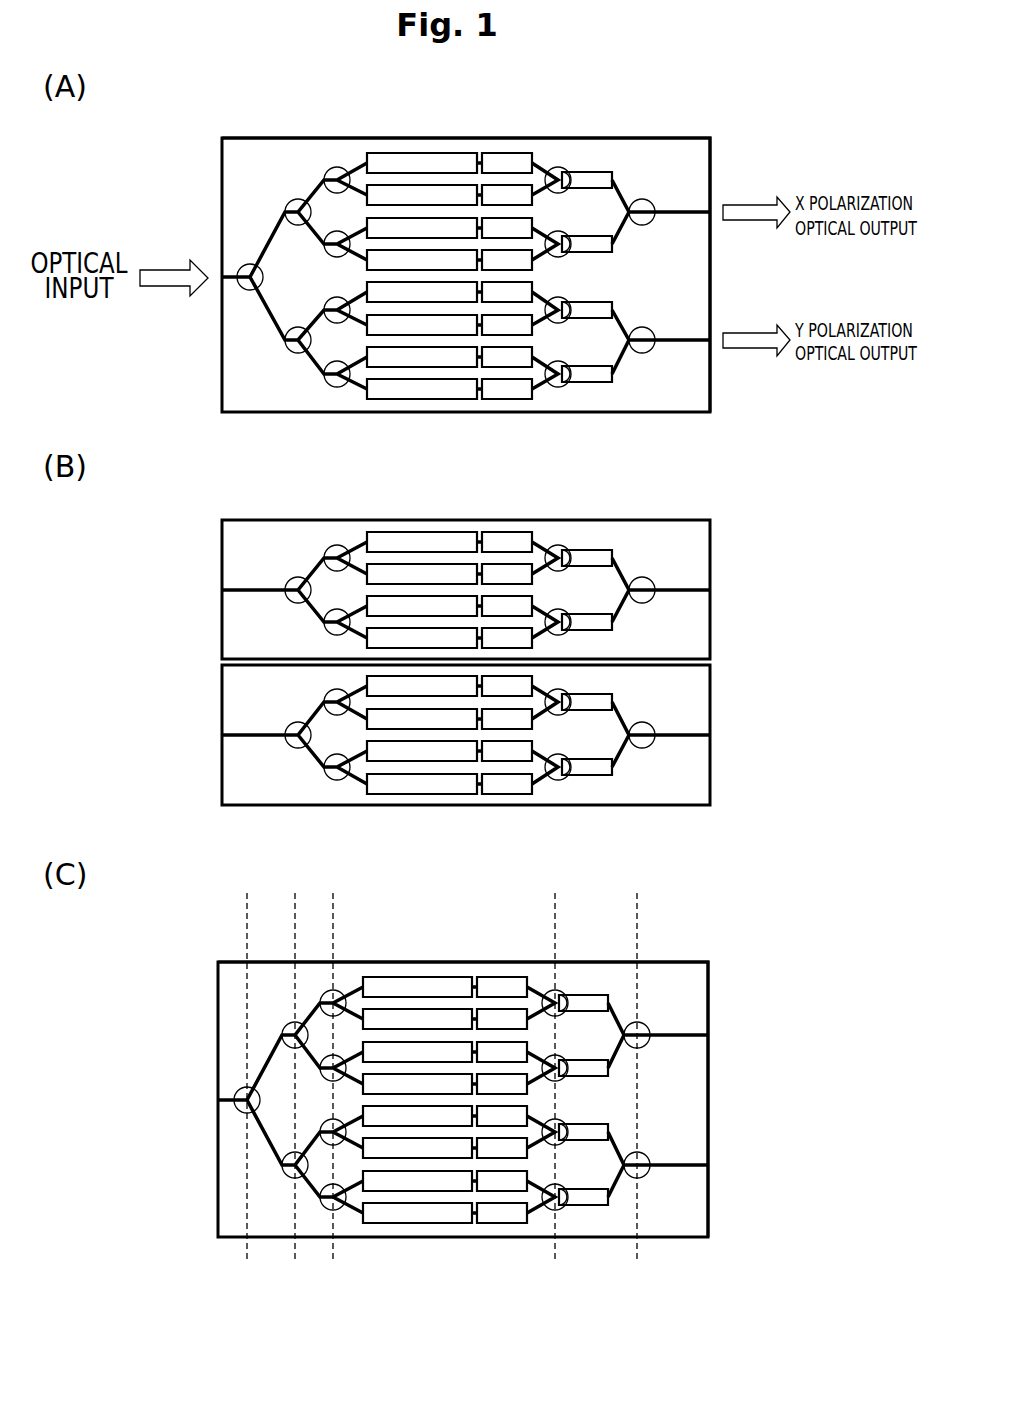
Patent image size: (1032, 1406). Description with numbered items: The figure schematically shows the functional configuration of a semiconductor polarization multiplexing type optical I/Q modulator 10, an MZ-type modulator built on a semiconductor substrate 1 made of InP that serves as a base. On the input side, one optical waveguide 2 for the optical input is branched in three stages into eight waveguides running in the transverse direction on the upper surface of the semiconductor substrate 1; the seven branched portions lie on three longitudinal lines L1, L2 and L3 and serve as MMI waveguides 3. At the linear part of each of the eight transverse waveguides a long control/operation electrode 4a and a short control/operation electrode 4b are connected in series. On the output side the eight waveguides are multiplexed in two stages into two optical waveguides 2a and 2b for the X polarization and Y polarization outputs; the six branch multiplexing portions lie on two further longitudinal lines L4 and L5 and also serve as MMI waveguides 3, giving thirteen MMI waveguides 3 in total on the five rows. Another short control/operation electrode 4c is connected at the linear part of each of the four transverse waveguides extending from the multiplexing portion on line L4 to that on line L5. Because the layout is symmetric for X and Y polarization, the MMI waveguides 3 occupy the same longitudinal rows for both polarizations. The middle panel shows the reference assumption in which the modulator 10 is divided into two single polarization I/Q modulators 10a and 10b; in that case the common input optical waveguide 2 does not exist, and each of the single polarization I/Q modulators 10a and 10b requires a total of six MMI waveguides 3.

The semiconductor substrate 1 is at (640, 155).
The optical waveguide 2 is at (230, 275).
The optical waveguide 2a is at (676, 210).
The optical waveguide 2b is at (683, 342).
The MMI waveguide 3 is at (295, 199).
The long control/operation electrode 4a is at (423, 153).
The short control/operation electrode 4b is at (505, 153).
The short control/operation electrode 4c is at (588, 172).
The polarization multiplexing type optical I/Q modulator 10 is at (755, 123).
The single polarization I/Q modulator 10a is at (222, 556).
The single polarization I/Q modulator 10b is at (222, 773).
The line L1 is at (249, 1063).
The line L2 is at (296, 1063).
The line L3 is at (339, 1063).
The line L4 is at (560, 1063).
The line L5 is at (640, 1063).